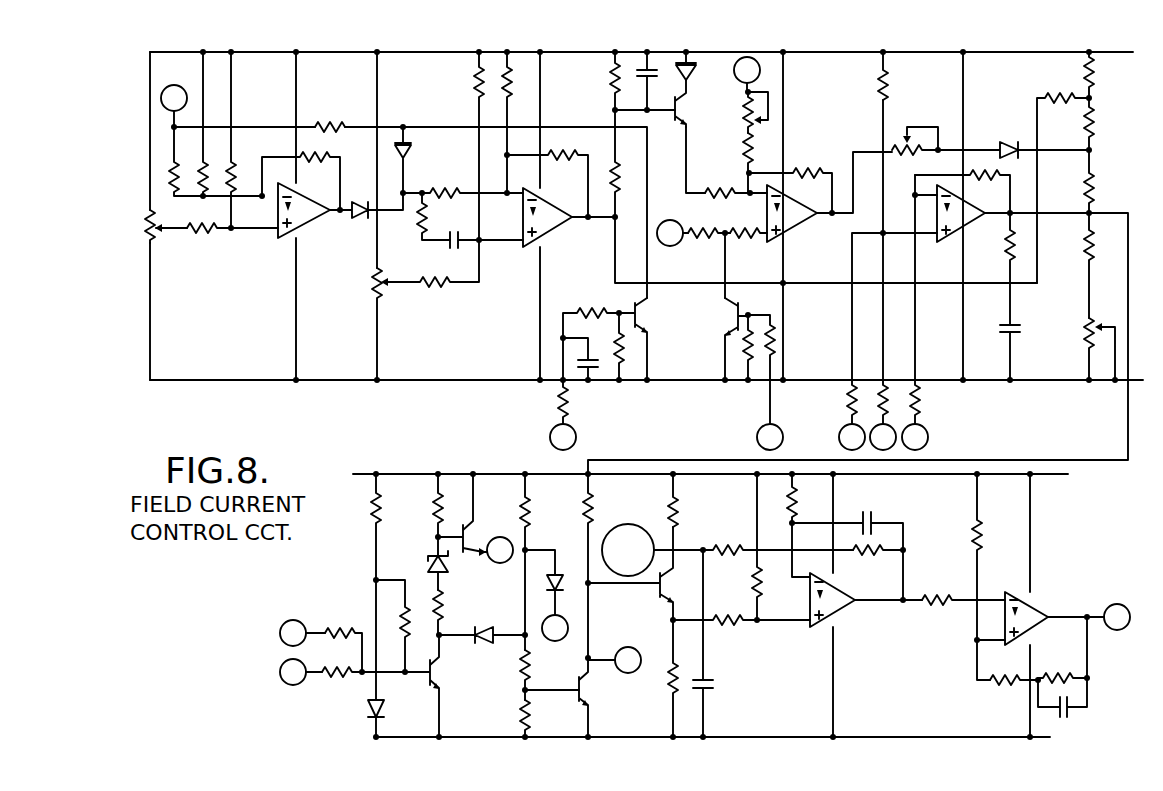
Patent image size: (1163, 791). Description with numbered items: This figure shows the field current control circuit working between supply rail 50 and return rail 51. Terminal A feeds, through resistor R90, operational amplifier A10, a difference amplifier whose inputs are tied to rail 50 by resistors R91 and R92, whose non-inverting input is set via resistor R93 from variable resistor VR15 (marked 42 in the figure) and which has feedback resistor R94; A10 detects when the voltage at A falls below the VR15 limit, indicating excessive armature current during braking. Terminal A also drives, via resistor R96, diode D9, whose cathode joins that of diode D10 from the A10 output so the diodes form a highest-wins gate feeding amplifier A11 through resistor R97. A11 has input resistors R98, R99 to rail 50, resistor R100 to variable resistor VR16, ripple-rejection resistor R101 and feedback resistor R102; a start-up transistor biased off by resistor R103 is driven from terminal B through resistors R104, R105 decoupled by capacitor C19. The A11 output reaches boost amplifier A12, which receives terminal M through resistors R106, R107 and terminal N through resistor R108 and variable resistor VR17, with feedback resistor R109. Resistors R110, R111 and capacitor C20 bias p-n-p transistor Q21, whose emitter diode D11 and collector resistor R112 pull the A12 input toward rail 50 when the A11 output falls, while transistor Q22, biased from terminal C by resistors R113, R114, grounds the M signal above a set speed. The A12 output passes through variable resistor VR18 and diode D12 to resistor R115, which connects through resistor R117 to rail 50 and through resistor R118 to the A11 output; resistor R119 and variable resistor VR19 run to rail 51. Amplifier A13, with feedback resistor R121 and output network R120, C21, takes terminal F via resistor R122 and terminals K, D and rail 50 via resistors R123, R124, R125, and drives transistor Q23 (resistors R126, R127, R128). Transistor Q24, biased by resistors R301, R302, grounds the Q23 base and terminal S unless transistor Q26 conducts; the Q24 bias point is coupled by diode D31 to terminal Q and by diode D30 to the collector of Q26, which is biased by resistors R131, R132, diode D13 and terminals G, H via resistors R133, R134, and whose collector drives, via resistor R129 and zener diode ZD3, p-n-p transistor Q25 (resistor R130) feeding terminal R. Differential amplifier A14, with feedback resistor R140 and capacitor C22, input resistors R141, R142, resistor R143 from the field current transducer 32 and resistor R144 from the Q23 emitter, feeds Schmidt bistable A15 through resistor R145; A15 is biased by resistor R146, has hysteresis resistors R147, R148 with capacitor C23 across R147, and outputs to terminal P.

The rail 50 is at (233, 55).
The rail 51 is at (424, 382).
The field current setting potentiometer 42 is at (172, 249).
The field current transducer 32 is at (652, 550).
The terminal A is at (174, 106).
The terminal M is at (672, 233).
The terminal N is at (747, 74).
The terminal B is at (563, 437).
The terminal C is at (770, 437).
The terminal D is at (852, 437).
The terminal K is at (883, 437).
The terminal F is at (915, 437).
The terminal H is at (302, 633).
The terminal G is at (301, 672).
The terminal R is at (500, 550).
The terminal Q is at (555, 615).
The terminal S is at (614, 660).
The terminal P is at (1089, 617).
The operational amplifier A10 is at (292, 200).
The amplifier A11 is at (553, 224).
The amplifier A12 is at (793, 230).
The operational amplifier A13 is at (980, 215).
The operational amplifier A14 is at (846, 608).
The amplifier A15 is at (1042, 612).
The resistor R90 is at (170, 178).
The resistor R91 is at (205, 165).
The resistor R92 is at (236, 166).
The resistor R93 is at (205, 235).
The resistor R94 is at (327, 161).
The resistor R96 is at (320, 122).
The resistor R97 is at (443, 190).
The resistor R98 is at (510, 89).
The resistor R99 is at (474, 95).
The resistor R100 is at (437, 289).
The resistor R101 is at (414, 232).
The resistor R102 is at (550, 147).
The resistor R103 is at (622, 368).
The resistor R104 is at (580, 310).
The resistor R105 is at (556, 415).
The resistor R106 is at (700, 238).
The resistor R107 is at (741, 238).
The resistor R108 is at (746, 148).
The resistor R109 is at (802, 167).
The resistor R110 is at (612, 165).
The resistor R111 is at (605, 83).
The resistor R112 is at (743, 192).
The resistor R113 is at (773, 324).
The resistor R114 is at (746, 362).
The resistor R115 is at (1095, 127).
The resistor R117 is at (1092, 81).
The resistor R118 is at (1053, 92).
The resistor R119 is at (1083, 261).
The resistor R120 is at (1010, 255).
The resistor R121 is at (978, 178).
The resistor R122 is at (921, 398).
The resistor R123 is at (879, 393).
The resistor R124 is at (845, 398).
The resistor R125 is at (890, 93).
The resistor R126 is at (577, 515).
The resistor R127 is at (682, 514).
The resistor R128 is at (672, 673).
The resistor R129 is at (443, 608).
The resistor R130 is at (433, 518).
The resistor R131 is at (370, 517).
The resistor R132 is at (427, 597).
The resistor R133 is at (325, 677).
The resistor R134 is at (331, 628).
The resistor R140 is at (855, 553).
The resistor R141 is at (795, 495).
The resistor R142 is at (754, 588).
The resistor R143 is at (707, 547).
The resistor R144 is at (727, 622).
The resistor R145 is at (931, 594).
The resistor R146 is at (1010, 515).
The resistor R147 is at (1058, 674).
The resistor R148 is at (993, 688).
The resistor R301 is at (523, 662).
The resistor R302 is at (521, 711).
The variable resistor VR15 is at (172, 249).
The variable resistor VR16 is at (371, 287).
The variable resistor VR17 is at (745, 104).
The variable resistor VR18 is at (903, 140).
The variable resistor VR19 is at (1078, 332).
The capacitor C19 is at (575, 362).
The capacitor C20 is at (638, 81).
The capacitor C21 is at (998, 328).
The capacitor C22 is at (867, 514).
The capacitor C23 is at (1067, 711).
The diode D9 is at (412, 150).
The diode D10 is at (351, 219).
The diode D11 is at (696, 76).
The diode D12 is at (1013, 138).
The diode D13 is at (363, 703).
The diode D30 is at (482, 645).
The diode D31 is at (570, 567).
The zener diode ZD3 is at (426, 566).
The p-n-p transistor Q21 is at (688, 111).
The n-p-n transistor Q22 is at (733, 320).
The transistor Q23 is at (668, 594).
The transistor Q24 is at (590, 694).
The pnp transistor Q25 is at (466, 531).
The transistor Q26 is at (648, 320).